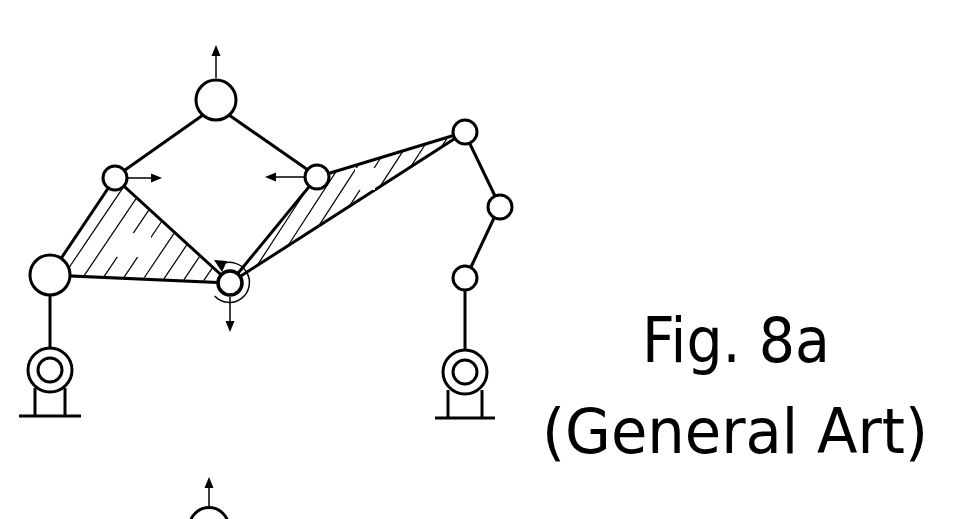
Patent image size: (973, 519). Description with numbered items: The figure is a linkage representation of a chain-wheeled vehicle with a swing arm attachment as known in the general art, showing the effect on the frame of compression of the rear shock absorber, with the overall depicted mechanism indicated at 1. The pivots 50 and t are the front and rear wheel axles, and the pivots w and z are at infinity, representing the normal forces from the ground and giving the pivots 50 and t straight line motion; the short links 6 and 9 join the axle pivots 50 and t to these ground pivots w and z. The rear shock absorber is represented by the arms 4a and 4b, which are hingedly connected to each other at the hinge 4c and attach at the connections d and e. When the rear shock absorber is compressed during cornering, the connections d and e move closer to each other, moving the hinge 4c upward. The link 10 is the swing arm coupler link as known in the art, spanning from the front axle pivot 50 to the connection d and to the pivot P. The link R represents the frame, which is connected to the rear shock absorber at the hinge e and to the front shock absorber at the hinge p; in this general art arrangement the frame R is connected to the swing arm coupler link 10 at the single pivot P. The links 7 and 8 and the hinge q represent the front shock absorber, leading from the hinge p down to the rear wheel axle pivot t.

The mechanism (general art linkage) 1 is at (227, 464).
The shock absorber arm 4a is at (164, 141).
The shock absorber arm 4b is at (268, 142).
The hinge 4c is at (216, 82).
The link 6 is at (61, 321).
The link 7 is at (484, 170).
The link 8 is at (479, 242).
The link 9 is at (474, 320).
The swing arm coupler link 10 is at (140, 230).
The front wheel axle pivot 50 is at (50, 275).
The frame R is at (347, 207).
The connection d is at (132, 178).
The hinge e is at (297, 177).
The hinge p is at (465, 132).
The hinge q is at (500, 207).
The rear wheel axle pivot t is at (465, 278).
The pivot at infinity z is at (465, 384).
The pivot at infinity w is at (50, 382).
The pivot P is at (231, 296).